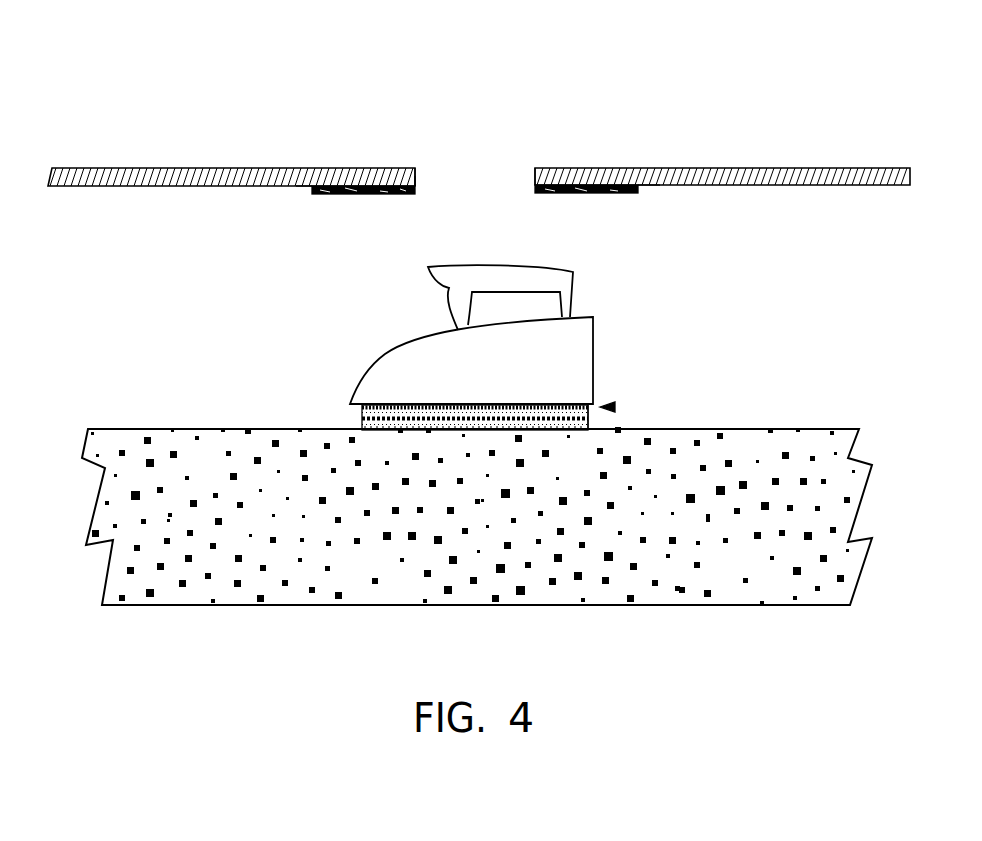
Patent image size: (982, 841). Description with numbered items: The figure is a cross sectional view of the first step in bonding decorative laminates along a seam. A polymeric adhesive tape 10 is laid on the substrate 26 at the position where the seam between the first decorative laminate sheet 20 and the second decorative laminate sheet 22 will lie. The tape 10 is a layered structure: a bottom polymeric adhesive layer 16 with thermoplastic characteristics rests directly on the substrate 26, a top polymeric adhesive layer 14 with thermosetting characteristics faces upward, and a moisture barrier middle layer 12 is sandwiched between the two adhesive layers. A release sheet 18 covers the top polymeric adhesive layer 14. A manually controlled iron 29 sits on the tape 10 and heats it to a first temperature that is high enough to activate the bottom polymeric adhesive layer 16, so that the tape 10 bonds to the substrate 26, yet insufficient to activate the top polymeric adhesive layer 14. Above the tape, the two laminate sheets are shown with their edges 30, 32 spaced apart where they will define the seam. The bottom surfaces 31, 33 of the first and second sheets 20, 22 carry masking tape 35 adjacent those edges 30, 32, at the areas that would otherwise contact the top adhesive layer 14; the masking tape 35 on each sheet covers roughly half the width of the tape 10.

The polymeric adhesive tape 10 is at (615, 407).
The moisture barrier middle layer 12 is at (589, 418).
The top polymeric adhesive layer 14 is at (360, 425).
The bottom polymeric adhesive layer 16 is at (362, 414).
The release sheet 18 is at (378, 404).
The first decorative laminate sheet 20 is at (636, 168).
The second decorative laminate sheet 22 is at (222, 168).
The substrate 26 is at (235, 533).
The manually controlled iron 29 is at (594, 338).
The edge of first decorative laminate sheet 30 is at (533, 177).
The bottom surface of first decorative laminate sheet 31 is at (647, 187).
The edge of second decorative laminate sheet 32 is at (417, 181).
The bottom surface of second decorative laminate sheet 33 is at (300, 188).
The masking tape 35 is at (367, 195).